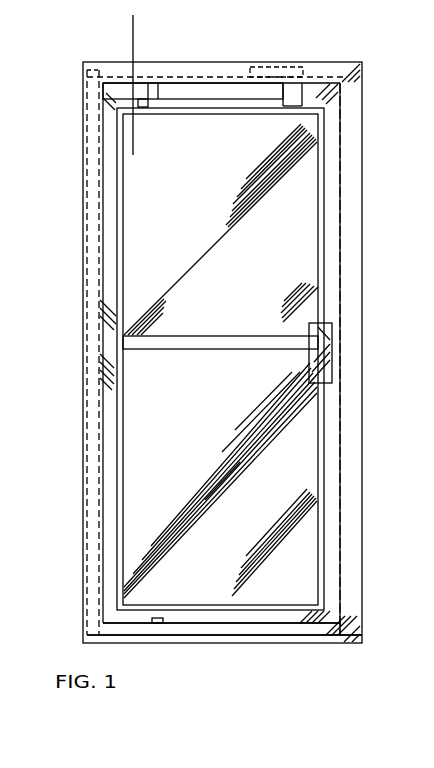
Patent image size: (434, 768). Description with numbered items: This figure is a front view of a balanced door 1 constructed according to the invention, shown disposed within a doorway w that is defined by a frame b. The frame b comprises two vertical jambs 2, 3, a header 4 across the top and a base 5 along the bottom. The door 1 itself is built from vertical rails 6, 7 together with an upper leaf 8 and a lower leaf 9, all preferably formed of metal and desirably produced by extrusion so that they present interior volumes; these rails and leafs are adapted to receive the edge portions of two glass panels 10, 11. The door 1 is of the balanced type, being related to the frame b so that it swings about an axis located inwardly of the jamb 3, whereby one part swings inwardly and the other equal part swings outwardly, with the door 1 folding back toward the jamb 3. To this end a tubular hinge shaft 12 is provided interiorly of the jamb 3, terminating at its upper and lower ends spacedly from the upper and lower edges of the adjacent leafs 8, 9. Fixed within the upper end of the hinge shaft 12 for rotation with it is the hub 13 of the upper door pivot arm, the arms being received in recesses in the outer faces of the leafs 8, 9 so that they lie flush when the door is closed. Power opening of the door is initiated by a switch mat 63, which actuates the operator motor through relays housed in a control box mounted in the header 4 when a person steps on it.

The door 1 is at (300, 212).
The vertical jamb 2 is at (155, 571).
The vertical jamb 3 is at (90, 307).
The header 4 is at (82, 80).
The base 5 is at (266, 628).
The vertical rail 6 is at (335, 237).
The vertical rail 7 is at (107, 250).
The upper leaf 8 is at (190, 62).
The lower leaf 9 is at (240, 108).
The glass panel 10 is at (302, 277).
The glass panel 11 is at (312, 433).
The hinge shaft 12 is at (138, 22).
The hub 13 is at (133, 15).
The switch mat 63 is at (305, 632).
The frame b is at (362, 98).
The doorway w is at (338, 150).